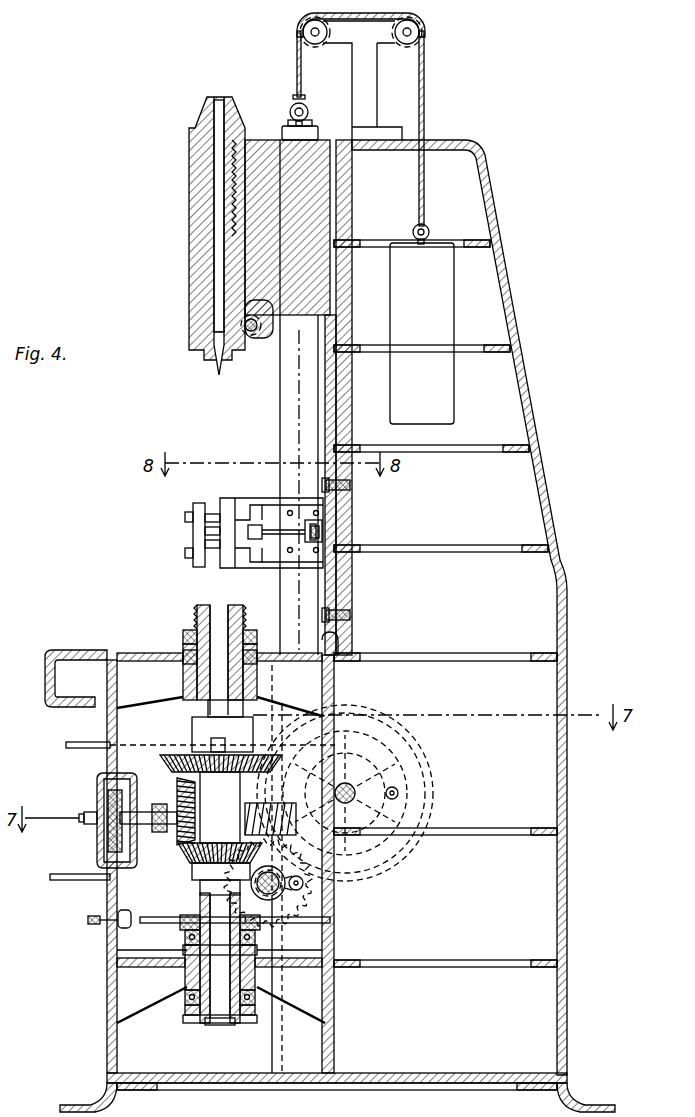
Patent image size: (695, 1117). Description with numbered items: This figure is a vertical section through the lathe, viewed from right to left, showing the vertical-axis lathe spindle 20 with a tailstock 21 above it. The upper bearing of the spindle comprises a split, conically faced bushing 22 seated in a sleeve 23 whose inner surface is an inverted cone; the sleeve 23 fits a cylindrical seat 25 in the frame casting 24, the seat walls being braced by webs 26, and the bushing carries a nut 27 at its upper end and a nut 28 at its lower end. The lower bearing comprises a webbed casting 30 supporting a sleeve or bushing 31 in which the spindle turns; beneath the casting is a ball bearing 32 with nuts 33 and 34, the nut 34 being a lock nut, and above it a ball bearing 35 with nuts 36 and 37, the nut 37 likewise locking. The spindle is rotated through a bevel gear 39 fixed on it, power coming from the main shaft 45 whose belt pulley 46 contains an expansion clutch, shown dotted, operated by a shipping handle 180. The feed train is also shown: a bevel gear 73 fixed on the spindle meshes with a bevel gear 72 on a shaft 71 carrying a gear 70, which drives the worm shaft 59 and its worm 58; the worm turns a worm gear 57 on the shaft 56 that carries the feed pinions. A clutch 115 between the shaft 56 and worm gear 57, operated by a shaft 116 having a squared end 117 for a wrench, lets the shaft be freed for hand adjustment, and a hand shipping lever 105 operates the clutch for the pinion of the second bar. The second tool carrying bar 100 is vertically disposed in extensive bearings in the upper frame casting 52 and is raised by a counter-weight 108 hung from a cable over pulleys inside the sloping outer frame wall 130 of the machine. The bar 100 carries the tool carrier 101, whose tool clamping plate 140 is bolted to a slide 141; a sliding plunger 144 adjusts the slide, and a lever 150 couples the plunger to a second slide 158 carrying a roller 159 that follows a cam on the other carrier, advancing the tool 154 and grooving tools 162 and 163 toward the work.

The lathe spindle 20 is at (233, 626).
The tailstock 21 is at (195, 252).
The bushing 22 is at (183, 640).
The sleeve 23 is at (183, 657).
The frame casting 24 is at (107, 652).
The cylindrical seat 25 is at (258, 678).
The webs 26 is at (305, 695).
The nut 27 is at (250, 642).
The nut 28 is at (192, 706).
The webbed casting 30 is at (185, 962).
The sleeve or bushing 31 is at (185, 982).
The ball bearing 32 is at (185, 997).
The nut 33 is at (185, 1008).
The lock nut 34 is at (188, 1020).
The ball bearing 35 is at (183, 948).
The nut 36 is at (185, 934).
The lock nut 37 is at (185, 916).
The bevel gear 39 is at (160, 762).
The main shaft 45 is at (352, 790).
The belt pulley 46 is at (410, 745).
The upper frame casting 52 is at (313, 172).
The shaft 56 is at (322, 884).
The worm gear 57 is at (322, 896).
The worm 58 is at (225, 830).
The shaft 59 is at (197, 818).
The gear 70 is at (97, 800).
The shaft 71 is at (148, 810).
The bevel gear 72 is at (182, 852).
The bevel gear 73 is at (190, 866).
The second tool carrying bar 100 is at (288, 373).
The tool carrier 101 is at (248, 505).
The hand shipping lever 105 is at (60, 874).
The counter-weight 108 is at (440, 312).
The clutch 115 is at (305, 905).
The shaft 116 is at (141, 915).
The squared end 117 is at (95, 924).
The frame wall 130 is at (538, 458).
The tool clamping plate 140 is at (195, 505).
The slide 141 is at (237, 570).
The sliding plunger 144 is at (257, 524).
The lever 150 is at (275, 530).
The tool 154 is at (205, 518).
The slide 158 is at (322, 530).
The roller 159 is at (314, 542).
The tool 162 is at (205, 531).
The tool 163 is at (205, 544).
The shipping handle 180 is at (92, 742).